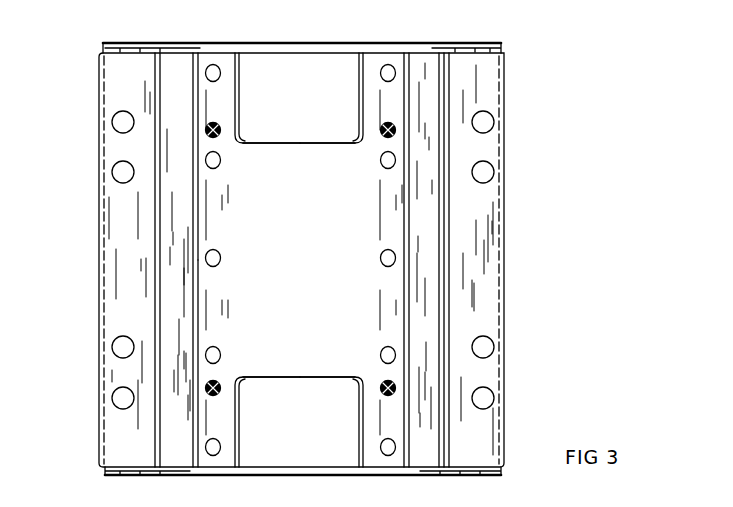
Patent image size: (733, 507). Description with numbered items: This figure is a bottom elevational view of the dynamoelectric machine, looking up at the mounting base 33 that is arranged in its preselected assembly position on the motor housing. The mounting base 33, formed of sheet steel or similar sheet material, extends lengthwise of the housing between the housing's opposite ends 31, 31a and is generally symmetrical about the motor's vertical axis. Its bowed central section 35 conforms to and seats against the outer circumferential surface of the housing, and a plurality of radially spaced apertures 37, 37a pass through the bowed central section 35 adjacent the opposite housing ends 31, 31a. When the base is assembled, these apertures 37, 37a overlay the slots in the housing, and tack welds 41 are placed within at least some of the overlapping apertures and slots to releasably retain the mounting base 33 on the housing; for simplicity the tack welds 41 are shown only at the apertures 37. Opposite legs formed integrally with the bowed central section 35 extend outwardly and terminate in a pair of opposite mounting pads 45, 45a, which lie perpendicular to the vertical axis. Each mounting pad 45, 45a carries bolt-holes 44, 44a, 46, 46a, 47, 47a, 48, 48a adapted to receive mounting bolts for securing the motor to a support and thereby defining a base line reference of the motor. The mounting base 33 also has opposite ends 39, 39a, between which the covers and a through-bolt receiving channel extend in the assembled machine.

The end portion of housing 31 is at (455, 468).
The end portion of housing 31a is at (437, 52).
The mounting base 33 is at (512, 320).
The bowed central section 35 is at (300, 330).
The aperture 37 is at (219, 349).
The aperture 37a is at (221, 158).
The end of mounting base 39 is at (185, 468).
The end of mounting base 39a is at (205, 52).
The tack weld 41 is at (221, 128).
The bolt-hole 44 is at (112, 347).
The bolt-hole 44a is at (494, 347).
The mounting pad 45 is at (104, 249).
The mounting pad 45a is at (499, 247).
The bolt-hole 46 is at (112, 172).
The bolt-hole 46a is at (494, 172).
The bolt-hole 47 is at (112, 398).
The bolt-hole 47a is at (494, 398).
The bolt-hole 48 is at (112, 122).
The bolt-hole 48a is at (494, 122).